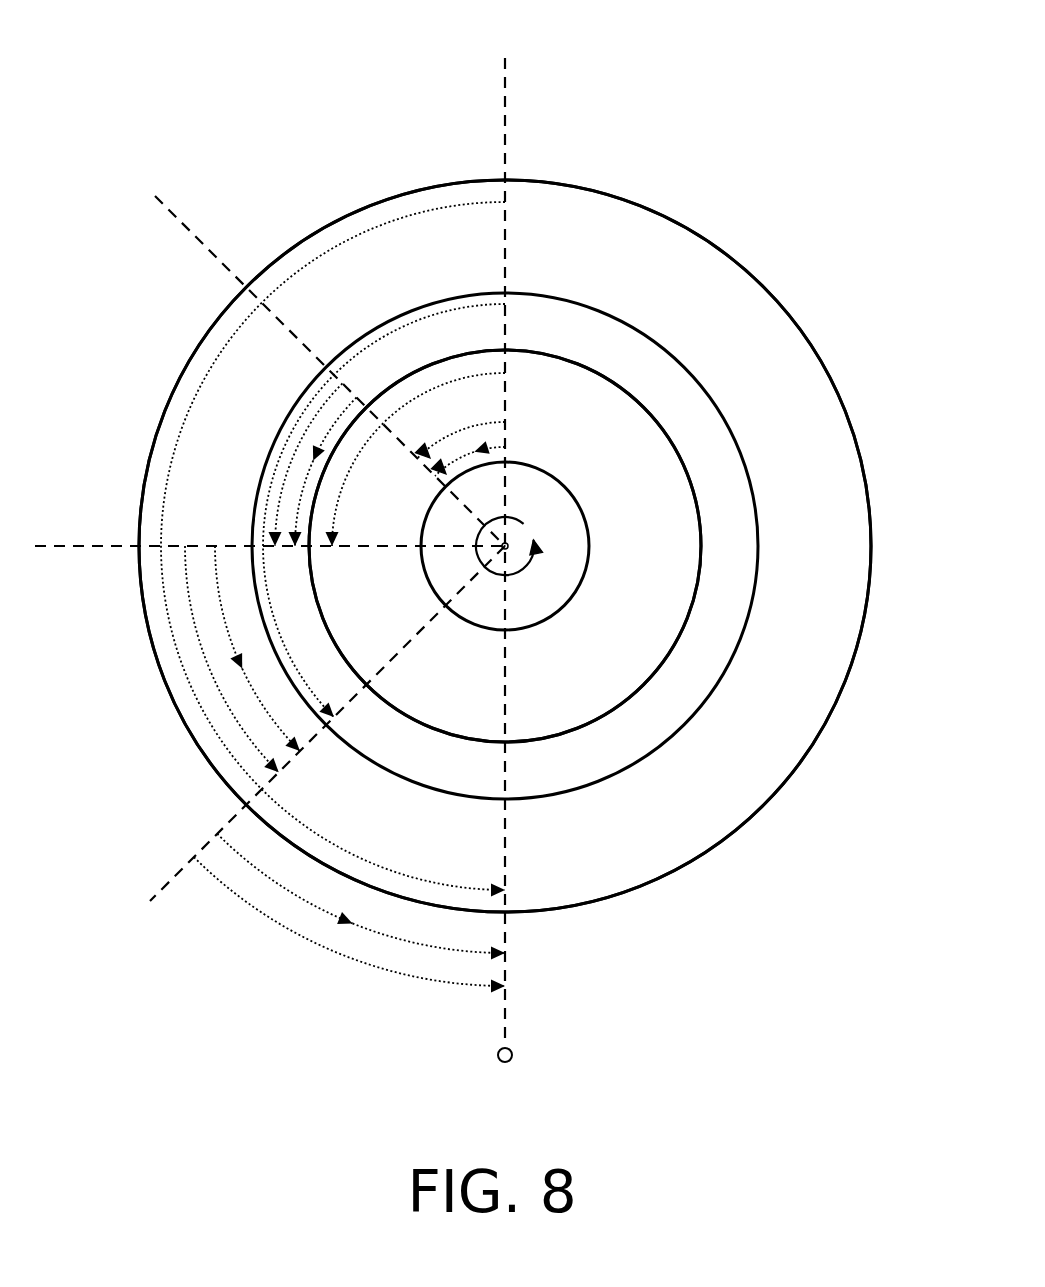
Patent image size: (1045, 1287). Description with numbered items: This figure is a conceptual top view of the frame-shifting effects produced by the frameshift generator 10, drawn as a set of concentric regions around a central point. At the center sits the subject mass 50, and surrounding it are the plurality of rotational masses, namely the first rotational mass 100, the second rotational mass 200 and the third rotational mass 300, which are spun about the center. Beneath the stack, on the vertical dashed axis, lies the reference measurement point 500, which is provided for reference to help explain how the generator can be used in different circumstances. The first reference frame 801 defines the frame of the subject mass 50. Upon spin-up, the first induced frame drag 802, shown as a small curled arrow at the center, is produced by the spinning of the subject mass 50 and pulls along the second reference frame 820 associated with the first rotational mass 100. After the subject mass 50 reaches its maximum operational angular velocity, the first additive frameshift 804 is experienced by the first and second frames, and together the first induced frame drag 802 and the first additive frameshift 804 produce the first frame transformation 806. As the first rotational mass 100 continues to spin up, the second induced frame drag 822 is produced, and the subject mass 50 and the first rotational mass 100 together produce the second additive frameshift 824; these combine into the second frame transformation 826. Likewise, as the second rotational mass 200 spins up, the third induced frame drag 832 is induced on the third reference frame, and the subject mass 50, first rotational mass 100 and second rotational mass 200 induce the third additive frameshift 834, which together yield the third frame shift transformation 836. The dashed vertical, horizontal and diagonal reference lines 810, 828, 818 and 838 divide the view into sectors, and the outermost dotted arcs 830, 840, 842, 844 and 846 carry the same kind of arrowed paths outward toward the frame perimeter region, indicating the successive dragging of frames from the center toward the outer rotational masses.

The frameshift generator 10 is at (146, 95).
The subject mass 50 is at (640, 548).
The first rotational mass 100 is at (743, 568).
The second rotational mass 200 is at (843, 568).
The third rotational mass 300 is at (873, 540).
The reference measurement point 500 is at (500, 1062).
The first reference frame 801 is at (585, 510).
The first induced frame drag 802 is at (523, 525).
The first additive frameshift 804 is at (455, 458).
The first frame transformation 806 is at (462, 445).
The vertical reference axis 810 is at (508, 76).
The upper diagonal reference line 818 is at (157, 210).
The second reference frame 820 is at (453, 385).
The second induced frame drag 822 is at (330, 428).
The second additive frameshift 824 is at (302, 492).
The second frame transformation 826 is at (278, 515).
The horizontal reference axis 828 is at (108, 548).
The scan path 830 is at (266, 599).
The third induced frame drag 832 is at (233, 641).
The third additive frameshift 834 is at (266, 708).
The third frame shift transformation 836 is at (252, 741).
The lower diagonal reference line 838 is at (150, 888).
The scan path 840 is at (333, 848).
The scan path 842 is at (305, 901).
The scan path 844 is at (407, 943).
The scan path 846 is at (440, 983).